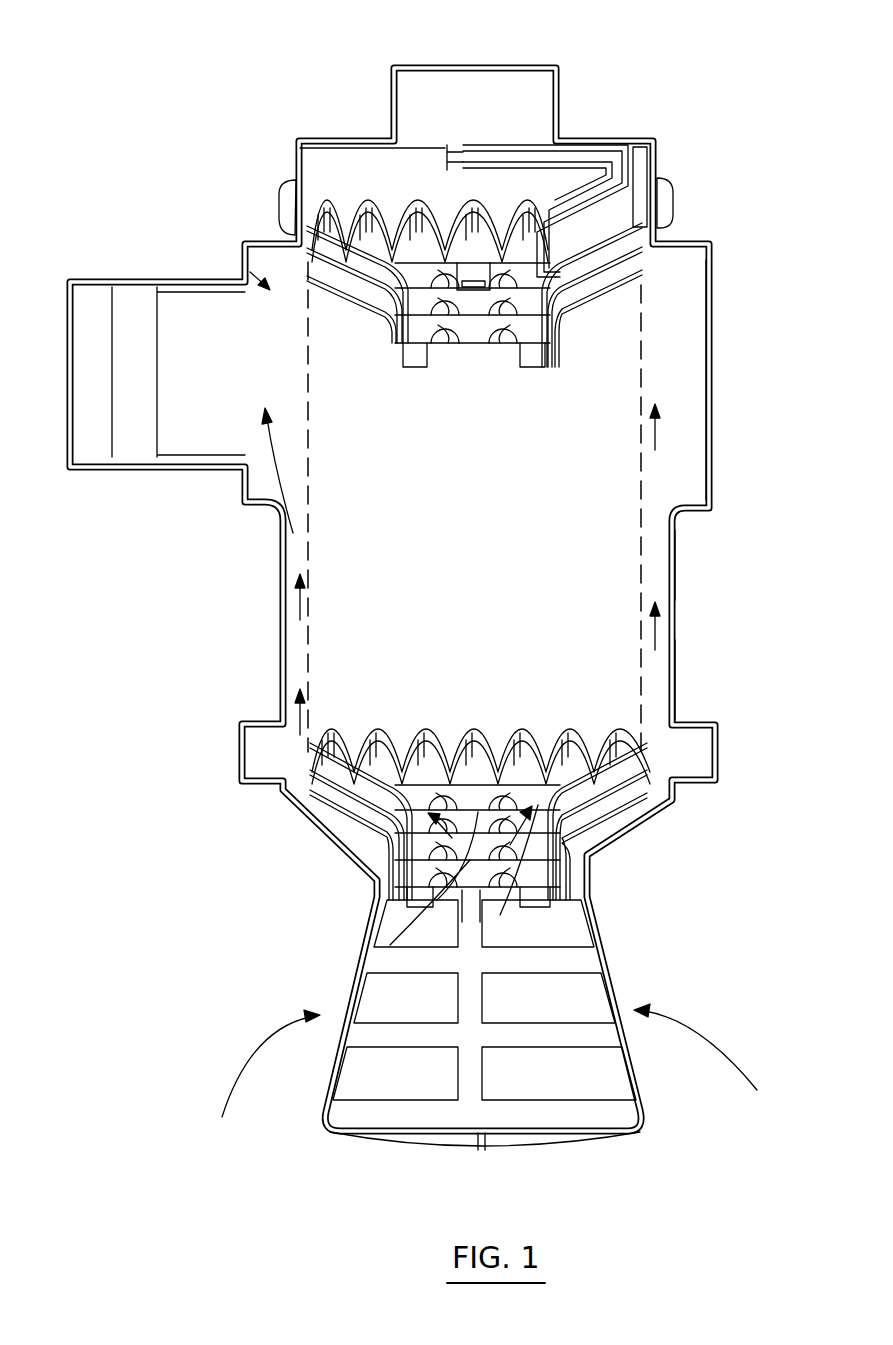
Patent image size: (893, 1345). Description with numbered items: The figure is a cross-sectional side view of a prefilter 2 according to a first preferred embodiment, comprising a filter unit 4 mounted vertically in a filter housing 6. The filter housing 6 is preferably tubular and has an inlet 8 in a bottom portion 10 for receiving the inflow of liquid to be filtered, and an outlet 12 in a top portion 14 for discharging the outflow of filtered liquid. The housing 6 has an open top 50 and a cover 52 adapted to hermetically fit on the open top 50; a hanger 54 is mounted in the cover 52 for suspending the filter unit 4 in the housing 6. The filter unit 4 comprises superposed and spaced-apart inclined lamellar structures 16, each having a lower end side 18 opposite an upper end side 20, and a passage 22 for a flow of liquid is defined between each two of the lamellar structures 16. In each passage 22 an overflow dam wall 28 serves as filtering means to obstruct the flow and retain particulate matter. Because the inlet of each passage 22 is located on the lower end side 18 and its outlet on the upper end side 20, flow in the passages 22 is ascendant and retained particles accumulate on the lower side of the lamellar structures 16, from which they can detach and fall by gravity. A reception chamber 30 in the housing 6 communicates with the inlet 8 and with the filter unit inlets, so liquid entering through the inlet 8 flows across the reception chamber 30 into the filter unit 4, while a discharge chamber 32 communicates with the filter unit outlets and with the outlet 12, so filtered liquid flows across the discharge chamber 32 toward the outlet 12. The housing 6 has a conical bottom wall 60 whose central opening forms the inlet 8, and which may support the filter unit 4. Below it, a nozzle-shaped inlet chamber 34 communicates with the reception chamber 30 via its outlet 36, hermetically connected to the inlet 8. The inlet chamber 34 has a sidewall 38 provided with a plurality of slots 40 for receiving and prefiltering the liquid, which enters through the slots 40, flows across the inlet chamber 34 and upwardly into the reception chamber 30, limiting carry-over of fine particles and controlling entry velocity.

The prefilter 2 is at (667, 84).
The hanger 54 is at (592, 165).
The cover 52 is at (660, 160).
The open top 50 is at (672, 198).
The overflow dam wall 28 is at (412, 205).
The outlet 12 is at (240, 262).
The passage 22 is at (308, 270).
The lamellar structures 16 is at (352, 282).
The lower end side 18 is at (440, 350).
The upper end side 20 is at (645, 277).
The filter unit 4 is at (583, 318).
The top portion 14 is at (713, 355).
The filter housing 6 is at (678, 532).
The discharge chamber 32 is at (311, 690).
The bottom portion 10 is at (678, 690).
The reception chamber 30 is at (482, 811).
The inlet 8 is at (440, 900).
The outlet of the inlet chamber 36 is at (440, 920).
The conical bottom wall 60 is at (640, 830).
The inlet chamber 34 is at (608, 959).
The slots 40 is at (595, 1002).
The sidewall 38 is at (595, 1037).